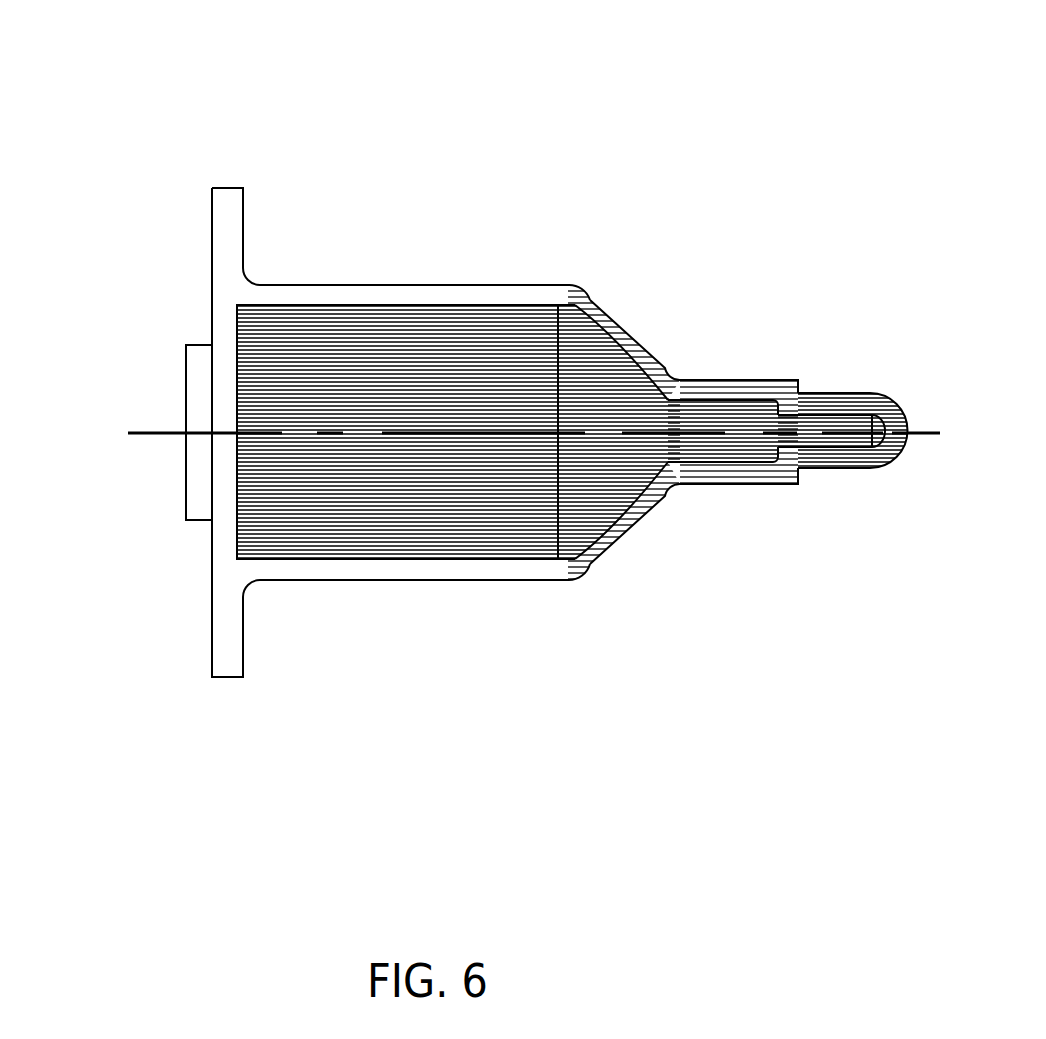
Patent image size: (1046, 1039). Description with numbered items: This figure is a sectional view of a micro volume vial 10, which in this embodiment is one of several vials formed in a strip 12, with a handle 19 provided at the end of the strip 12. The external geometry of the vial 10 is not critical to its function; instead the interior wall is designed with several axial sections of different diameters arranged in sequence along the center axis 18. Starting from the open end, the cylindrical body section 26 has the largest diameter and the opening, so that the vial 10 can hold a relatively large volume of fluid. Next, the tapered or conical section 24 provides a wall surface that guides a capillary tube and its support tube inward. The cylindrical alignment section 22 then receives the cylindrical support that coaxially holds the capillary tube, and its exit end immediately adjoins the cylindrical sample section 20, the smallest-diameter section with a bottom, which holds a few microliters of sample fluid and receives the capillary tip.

The micro volume vial 10 is at (499, 372).
The strip 12 is at (449, 150).
The center axis 18 is at (152, 424).
The handle 19 is at (193, 528).
The cylindrical sample section 20 is at (845, 448).
The cylindrical alignment section 22 is at (728, 477).
The conical section 24 is at (617, 522).
The cylindrical body section 26 is at (385, 570).